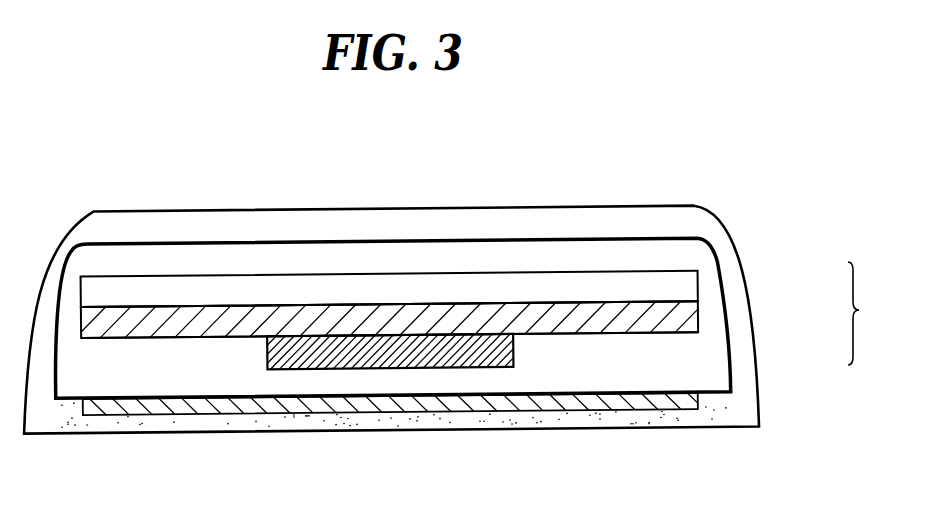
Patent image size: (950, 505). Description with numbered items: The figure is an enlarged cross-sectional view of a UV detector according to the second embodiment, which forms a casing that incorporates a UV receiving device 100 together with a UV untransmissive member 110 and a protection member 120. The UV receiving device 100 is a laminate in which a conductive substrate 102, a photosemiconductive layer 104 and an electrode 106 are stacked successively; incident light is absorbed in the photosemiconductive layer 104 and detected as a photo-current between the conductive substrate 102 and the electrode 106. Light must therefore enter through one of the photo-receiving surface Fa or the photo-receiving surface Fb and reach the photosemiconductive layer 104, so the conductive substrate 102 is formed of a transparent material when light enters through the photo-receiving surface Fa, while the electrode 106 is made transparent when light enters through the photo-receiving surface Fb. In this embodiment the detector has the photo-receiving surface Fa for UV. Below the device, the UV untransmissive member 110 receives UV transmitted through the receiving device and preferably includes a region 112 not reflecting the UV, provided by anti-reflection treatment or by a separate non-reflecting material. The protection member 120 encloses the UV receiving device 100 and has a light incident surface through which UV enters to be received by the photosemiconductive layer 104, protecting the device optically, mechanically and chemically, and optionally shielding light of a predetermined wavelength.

The UV receiving device 100 is at (877, 313).
The conductive substrate 102 is at (683, 283).
The photosemiconductive layer 104 is at (690, 317).
The electrode 106 is at (513, 341).
The UV untransmissive member 110 is at (72, 423).
The region not reflecting the UV 112 is at (193, 407).
The protection member 120 is at (281, 218).
The photo-receiving surface Fa is at (163, 305).
The photo-receiving surface Fb is at (172, 338).